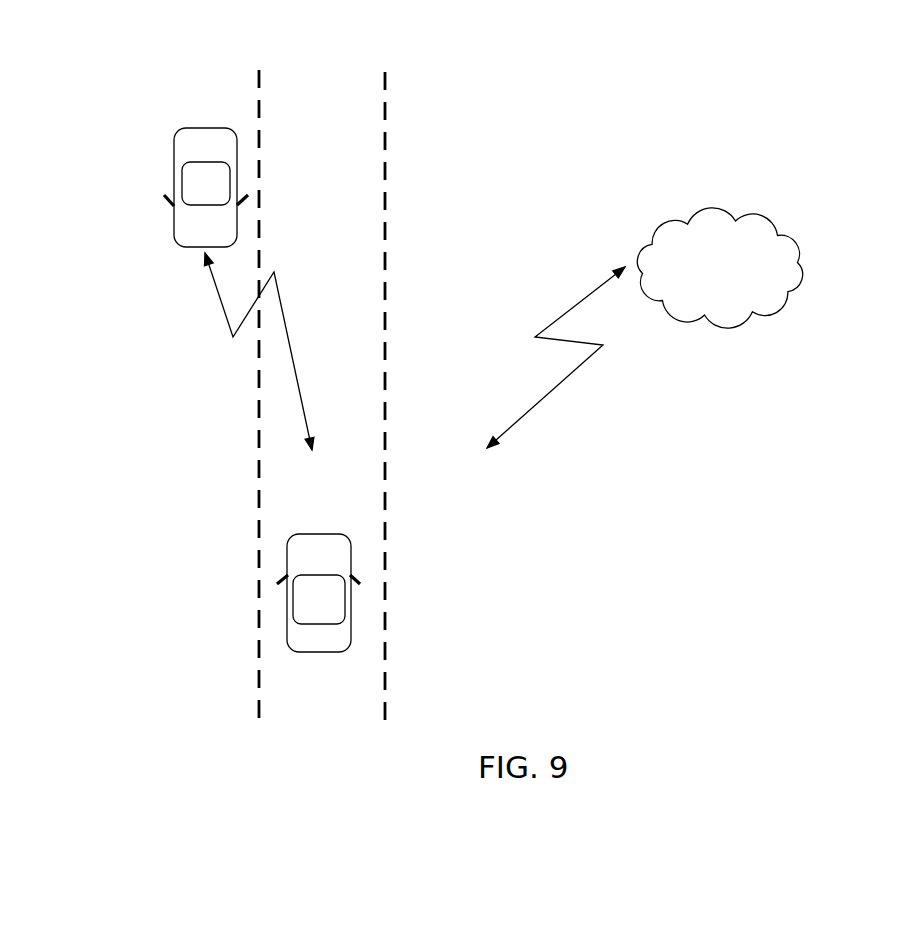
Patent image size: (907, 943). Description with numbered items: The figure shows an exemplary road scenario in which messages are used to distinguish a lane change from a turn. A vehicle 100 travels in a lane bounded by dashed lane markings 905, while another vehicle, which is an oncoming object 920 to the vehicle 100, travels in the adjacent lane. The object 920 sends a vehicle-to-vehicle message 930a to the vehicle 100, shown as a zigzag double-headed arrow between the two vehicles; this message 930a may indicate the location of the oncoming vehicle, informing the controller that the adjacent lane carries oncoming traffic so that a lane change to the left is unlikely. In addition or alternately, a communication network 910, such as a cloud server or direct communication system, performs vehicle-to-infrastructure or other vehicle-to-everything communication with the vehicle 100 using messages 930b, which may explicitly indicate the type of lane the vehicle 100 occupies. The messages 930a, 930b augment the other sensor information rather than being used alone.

The vehicle 100 is at (305, 652).
The lane marking 905 is at (258, 679).
The communication network 910 is at (723, 293).
The oncoming object 920 is at (174, 228).
The vehicle-to-vehicle message 930a is at (218, 309).
The message 930b is at (560, 387).